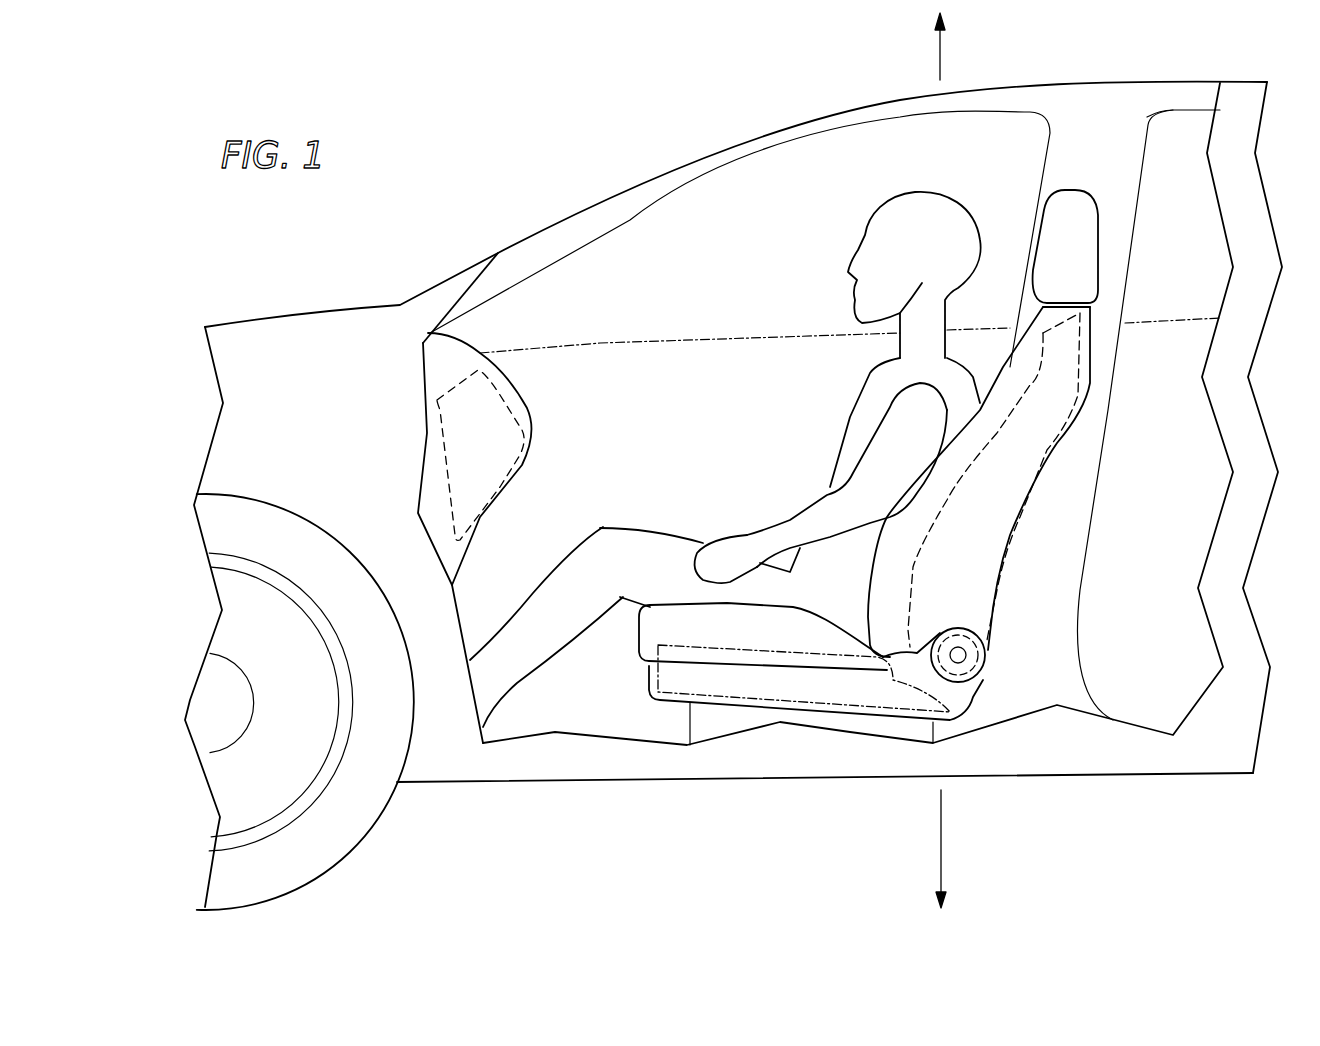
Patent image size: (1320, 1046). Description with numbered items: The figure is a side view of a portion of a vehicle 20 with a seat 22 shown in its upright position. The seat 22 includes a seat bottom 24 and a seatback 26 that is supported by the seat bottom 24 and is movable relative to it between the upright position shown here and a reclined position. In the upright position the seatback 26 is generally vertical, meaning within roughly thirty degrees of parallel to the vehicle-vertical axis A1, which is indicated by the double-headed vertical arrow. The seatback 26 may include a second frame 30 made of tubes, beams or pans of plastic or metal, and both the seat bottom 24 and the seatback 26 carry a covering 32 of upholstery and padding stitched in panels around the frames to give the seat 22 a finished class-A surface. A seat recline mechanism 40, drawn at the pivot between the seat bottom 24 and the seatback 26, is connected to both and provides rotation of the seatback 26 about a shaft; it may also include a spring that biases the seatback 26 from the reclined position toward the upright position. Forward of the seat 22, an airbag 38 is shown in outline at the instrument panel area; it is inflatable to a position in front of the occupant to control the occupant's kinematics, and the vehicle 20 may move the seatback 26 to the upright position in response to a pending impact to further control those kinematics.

The vehicle 20 is at (595, 169).
The seat 22 is at (897, 520).
The seat bottom 24 is at (733, 680).
The seatback 26 is at (1062, 387).
The second frame 30 is at (1033, 473).
The covering 32 is at (1008, 365).
The airbag 38 is at (425, 449).
The seat recline mechanism 40 is at (965, 702).
The vehicle-vertical axis A1 is at (944, 60).